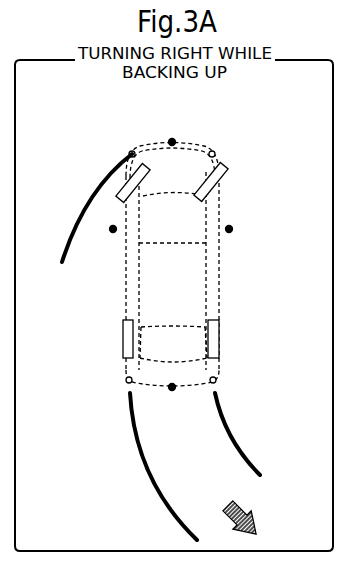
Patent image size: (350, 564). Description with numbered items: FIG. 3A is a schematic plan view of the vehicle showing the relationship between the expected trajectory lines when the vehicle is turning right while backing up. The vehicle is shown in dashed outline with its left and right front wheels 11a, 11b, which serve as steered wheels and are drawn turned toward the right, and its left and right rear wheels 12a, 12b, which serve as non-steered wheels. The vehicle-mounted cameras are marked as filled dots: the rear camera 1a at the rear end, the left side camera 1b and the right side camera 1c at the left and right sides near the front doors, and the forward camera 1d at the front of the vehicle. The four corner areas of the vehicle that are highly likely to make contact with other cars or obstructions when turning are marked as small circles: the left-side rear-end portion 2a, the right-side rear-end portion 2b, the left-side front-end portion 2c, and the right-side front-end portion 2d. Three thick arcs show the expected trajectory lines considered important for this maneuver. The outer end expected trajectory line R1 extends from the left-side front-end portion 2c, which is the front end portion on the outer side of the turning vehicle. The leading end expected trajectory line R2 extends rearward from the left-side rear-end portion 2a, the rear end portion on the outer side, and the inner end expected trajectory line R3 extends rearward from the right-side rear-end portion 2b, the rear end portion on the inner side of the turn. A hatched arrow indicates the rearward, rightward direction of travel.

The rear camera 1a is at (173, 390).
The left side camera 1b is at (113, 229).
The right side camera 1c is at (229, 229).
The forward camera 1d is at (172, 139).
The left-side rear-end portion 2a is at (126, 380).
The right-side rear-end portion 2b is at (216, 380).
The left-side front-end portion 2c is at (130, 152).
The right-side front-end portion 2d is at (213, 151).
The left front wheel 11a is at (122, 187).
The right front wheel 11b is at (224, 178).
The left rear wheel 12a is at (122, 347).
The right rear wheel 12b is at (219, 347).
The outer end expected trajectory line R1 is at (70, 238).
The leading end expected trajectory line R2 is at (150, 477).
The inner end expected trajectory line R3 is at (240, 442).